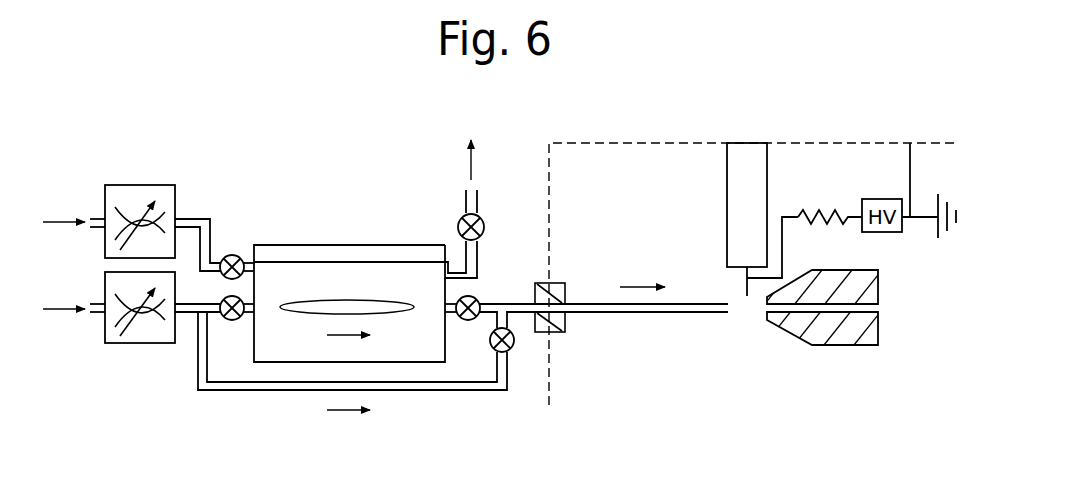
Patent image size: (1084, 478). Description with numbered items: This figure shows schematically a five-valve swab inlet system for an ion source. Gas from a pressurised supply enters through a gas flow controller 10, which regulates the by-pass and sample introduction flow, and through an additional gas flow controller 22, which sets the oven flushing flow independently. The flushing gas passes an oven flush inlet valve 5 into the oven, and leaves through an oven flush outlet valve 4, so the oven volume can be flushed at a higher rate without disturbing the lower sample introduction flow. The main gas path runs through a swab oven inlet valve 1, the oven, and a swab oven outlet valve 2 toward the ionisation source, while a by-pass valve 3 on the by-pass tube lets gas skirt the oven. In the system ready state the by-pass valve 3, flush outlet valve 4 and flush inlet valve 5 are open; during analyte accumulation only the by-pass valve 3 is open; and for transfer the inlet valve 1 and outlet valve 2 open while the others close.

The swab oven inlet valve 1 is at (232, 321).
The swab oven outlet valve 2 is at (478, 297).
The by-pass valve 3 is at (511, 350).
The oven flush outlet valve 4 is at (460, 219).
The oven flush inlet valve 5 is at (232, 255).
The gas flow controller 10 is at (134, 344).
The additional gas flow controller 22 is at (134, 185).